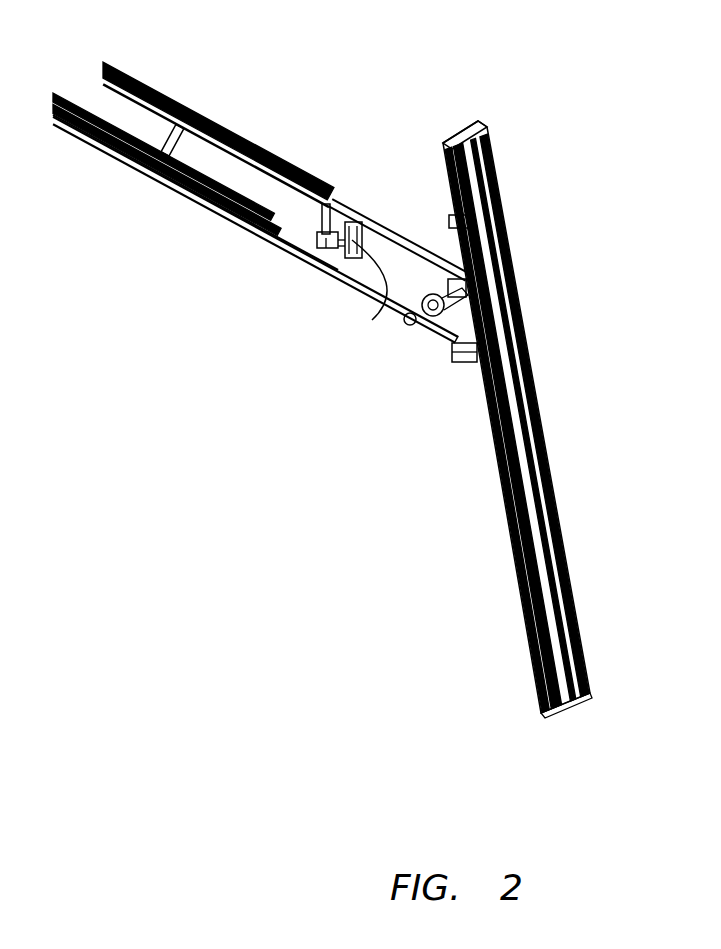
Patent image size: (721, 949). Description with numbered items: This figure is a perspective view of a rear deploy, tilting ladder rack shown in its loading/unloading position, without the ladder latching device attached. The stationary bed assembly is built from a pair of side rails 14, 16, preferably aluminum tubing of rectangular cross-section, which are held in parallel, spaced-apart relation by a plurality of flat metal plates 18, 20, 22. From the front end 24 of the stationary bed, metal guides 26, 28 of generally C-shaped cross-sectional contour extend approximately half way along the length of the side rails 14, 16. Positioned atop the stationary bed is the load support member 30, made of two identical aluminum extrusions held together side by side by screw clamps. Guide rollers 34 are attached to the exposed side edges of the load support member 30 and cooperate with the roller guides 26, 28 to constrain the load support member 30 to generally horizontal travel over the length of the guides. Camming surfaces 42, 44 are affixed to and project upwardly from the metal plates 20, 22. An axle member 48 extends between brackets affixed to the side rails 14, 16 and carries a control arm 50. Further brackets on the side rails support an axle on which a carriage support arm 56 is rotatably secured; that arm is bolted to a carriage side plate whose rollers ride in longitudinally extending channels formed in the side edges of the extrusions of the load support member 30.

The side rail 14 is at (350, 287).
The side rail 16 is at (410, 243).
The flat metal plate 18 is at (202, 120).
The flat metal plate 20 is at (307, 256).
The flat metal plate 22 is at (387, 307).
The front end 24 is at (57, 92).
The metal guide 26 is at (262, 149).
The metal guide 28 is at (180, 178).
The load support member 30 is at (545, 397).
The guide rollers 34 is at (472, 222).
The camming surface 42 is at (326, 232).
The camming surface 44 is at (363, 233).
The axle member 48 is at (406, 324).
The control arm 50 is at (420, 327).
The carriage support arm 56 is at (466, 363).